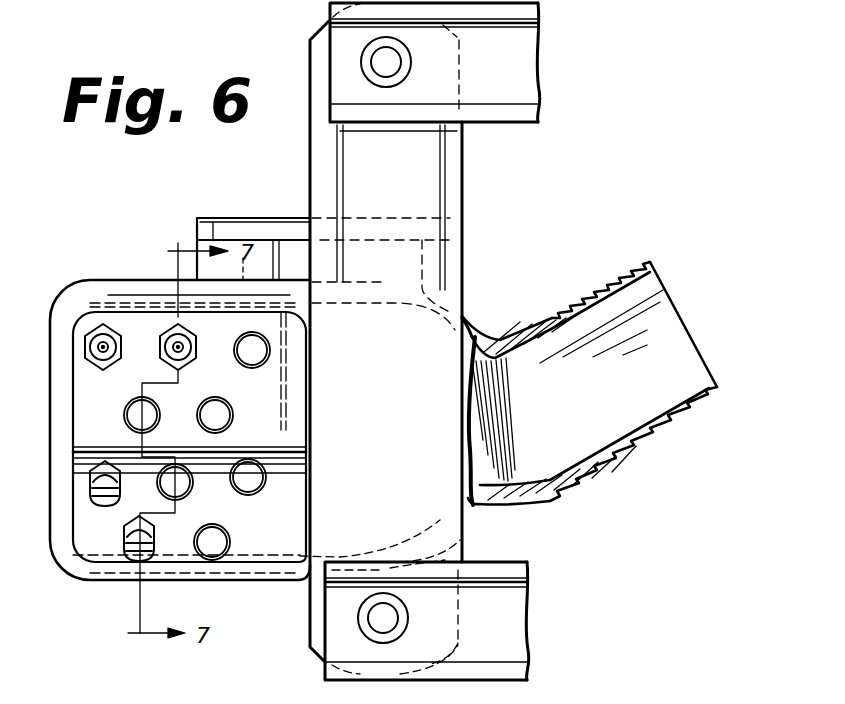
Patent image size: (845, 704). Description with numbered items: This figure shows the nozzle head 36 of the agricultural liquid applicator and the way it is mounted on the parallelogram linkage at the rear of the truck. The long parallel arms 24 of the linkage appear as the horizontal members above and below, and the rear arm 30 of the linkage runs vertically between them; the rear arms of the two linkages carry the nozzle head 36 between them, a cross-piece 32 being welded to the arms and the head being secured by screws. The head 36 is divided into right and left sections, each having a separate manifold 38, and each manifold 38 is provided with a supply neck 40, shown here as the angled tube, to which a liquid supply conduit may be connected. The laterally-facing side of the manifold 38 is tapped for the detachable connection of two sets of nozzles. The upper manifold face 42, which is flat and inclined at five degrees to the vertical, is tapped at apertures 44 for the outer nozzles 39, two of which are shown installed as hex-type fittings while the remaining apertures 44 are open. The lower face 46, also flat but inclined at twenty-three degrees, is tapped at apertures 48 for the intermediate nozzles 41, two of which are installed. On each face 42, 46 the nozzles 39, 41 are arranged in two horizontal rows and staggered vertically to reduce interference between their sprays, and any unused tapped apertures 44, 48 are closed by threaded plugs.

The long parallel arms 24 is at (532, 123).
The rear arm 30 is at (463, 208).
The cross-piece 32 is at (232, 216).
The nozzle head 36 is at (74, 280).
The manifold 38 is at (241, 582).
The outer nozzles 39 is at (93, 345).
The supply neck 40 is at (655, 435).
The intermediate nozzles 41 is at (93, 487).
The manifold face 42 is at (75, 388).
The tapped apertures 44 is at (253, 362).
The manifold face 46 is at (75, 510).
The tapped apertures 48 is at (213, 543).